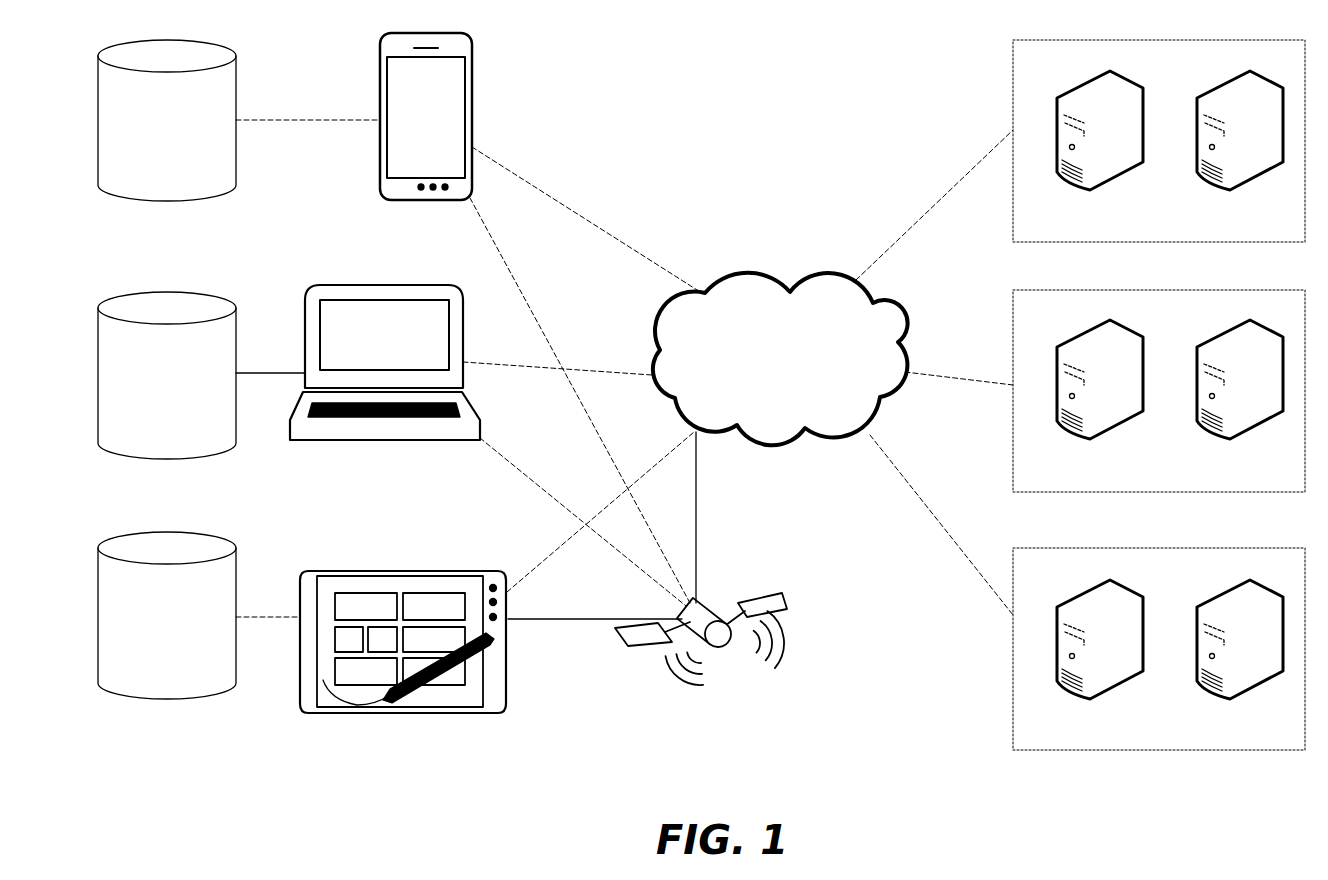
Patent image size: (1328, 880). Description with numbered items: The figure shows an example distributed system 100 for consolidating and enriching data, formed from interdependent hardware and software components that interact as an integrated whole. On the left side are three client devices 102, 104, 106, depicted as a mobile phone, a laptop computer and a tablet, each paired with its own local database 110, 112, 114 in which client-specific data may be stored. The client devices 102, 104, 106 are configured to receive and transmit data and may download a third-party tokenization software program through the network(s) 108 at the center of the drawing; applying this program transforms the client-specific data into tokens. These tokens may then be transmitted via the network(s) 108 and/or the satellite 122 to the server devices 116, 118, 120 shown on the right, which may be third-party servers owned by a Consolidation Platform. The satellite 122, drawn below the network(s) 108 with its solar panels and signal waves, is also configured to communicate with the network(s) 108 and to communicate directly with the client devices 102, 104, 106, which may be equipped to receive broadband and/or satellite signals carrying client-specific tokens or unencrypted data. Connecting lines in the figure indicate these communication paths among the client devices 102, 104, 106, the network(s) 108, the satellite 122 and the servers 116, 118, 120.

The system 100 is at (796, 85).
The client device 102 is at (408, 137).
The client device 104 is at (370, 485).
The client device 106 is at (388, 768).
The network(s) 108 is at (761, 402).
The local database 110 is at (148, 133).
The local database 112 is at (148, 389).
The local database 114 is at (148, 634).
The server device 116 is at (1143, 227).
The server device 118 is at (1143, 479).
The server device 120 is at (1143, 734).
The satellite 122 is at (687, 734).